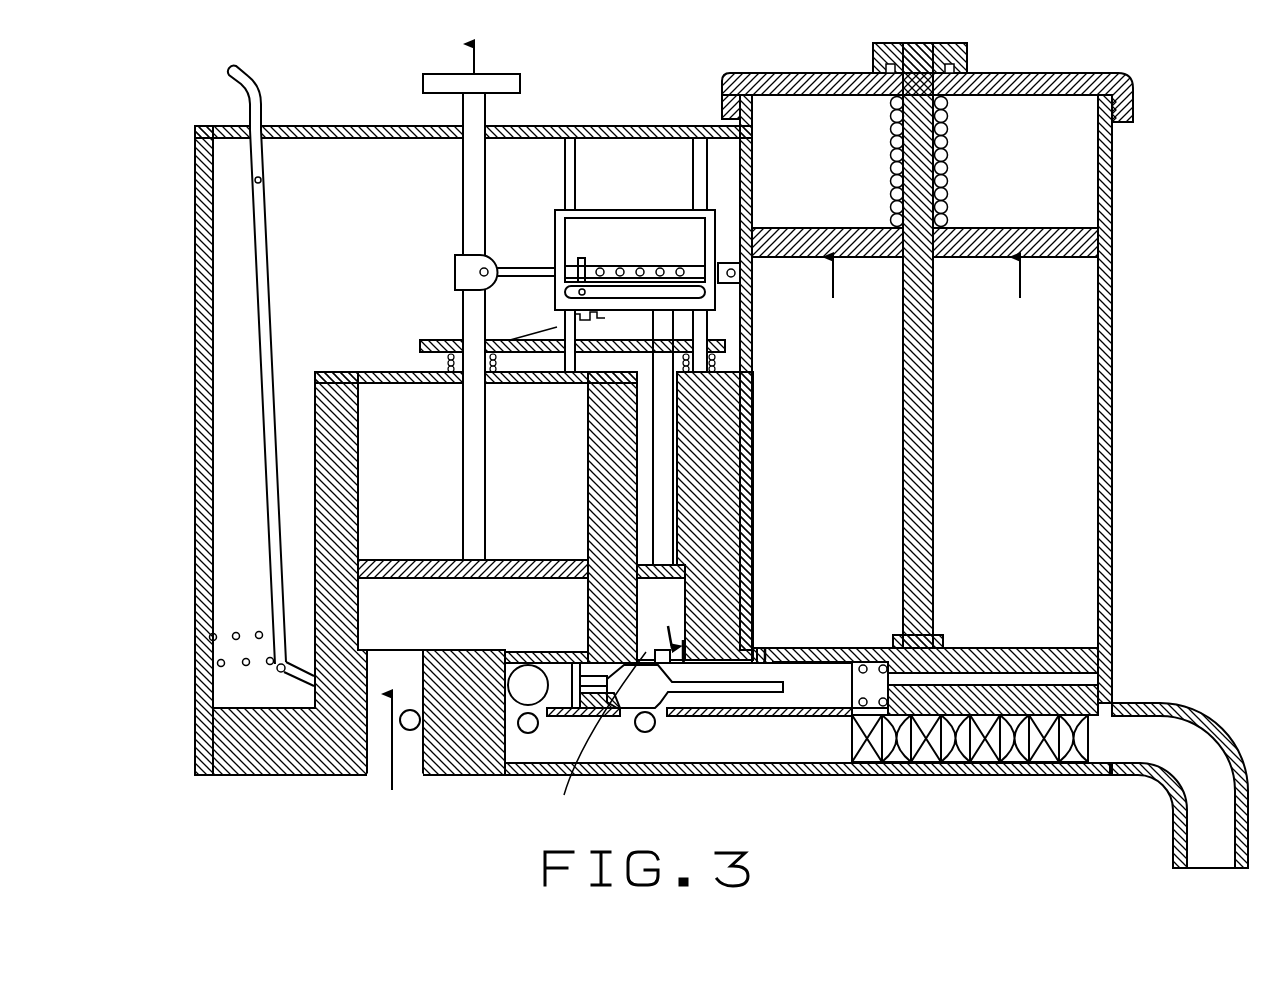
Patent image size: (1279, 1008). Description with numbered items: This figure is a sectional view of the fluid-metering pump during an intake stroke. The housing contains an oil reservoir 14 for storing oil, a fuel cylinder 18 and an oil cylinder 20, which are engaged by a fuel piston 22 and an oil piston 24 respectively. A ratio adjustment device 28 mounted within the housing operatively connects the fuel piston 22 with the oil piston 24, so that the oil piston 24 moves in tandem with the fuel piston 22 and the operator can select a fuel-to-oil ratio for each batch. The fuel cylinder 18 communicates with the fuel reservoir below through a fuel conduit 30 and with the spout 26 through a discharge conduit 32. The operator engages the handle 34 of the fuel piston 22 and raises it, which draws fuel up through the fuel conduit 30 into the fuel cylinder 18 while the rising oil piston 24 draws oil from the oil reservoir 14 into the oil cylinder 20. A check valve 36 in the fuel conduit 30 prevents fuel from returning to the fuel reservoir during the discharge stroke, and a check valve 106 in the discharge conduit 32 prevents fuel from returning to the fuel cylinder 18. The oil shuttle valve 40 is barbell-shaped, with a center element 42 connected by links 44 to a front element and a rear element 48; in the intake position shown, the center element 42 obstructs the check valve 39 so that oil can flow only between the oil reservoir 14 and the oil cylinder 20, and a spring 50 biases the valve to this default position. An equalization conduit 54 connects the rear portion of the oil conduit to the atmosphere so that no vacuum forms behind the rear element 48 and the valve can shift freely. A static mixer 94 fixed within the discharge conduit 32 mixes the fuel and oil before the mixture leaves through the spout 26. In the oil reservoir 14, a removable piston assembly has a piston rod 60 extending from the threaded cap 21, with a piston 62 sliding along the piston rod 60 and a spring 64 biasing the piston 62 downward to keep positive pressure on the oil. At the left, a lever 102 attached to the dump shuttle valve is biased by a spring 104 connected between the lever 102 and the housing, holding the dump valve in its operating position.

The oil reservoir 14 is at (852, 468).
The fuel cylinder 18 is at (544, 492).
The oil cylinder 20 is at (674, 612).
The cap 21 is at (1100, 80).
The fuel piston 22 is at (478, 438).
The oil piston 24 is at (745, 390).
The spout 26 is at (1212, 850).
The ratio adjustment device 28 is at (615, 210).
The fuel conduit 30 is at (408, 685).
The discharge conduit 32 is at (540, 697).
The handle 34 is at (508, 80).
The check valve 36 is at (412, 732).
The check valve 39 is at (648, 733).
The oil shuttle valve 40 is at (599, 737).
The center element 42 is at (649, 704).
The links 44 is at (764, 690).
The rear element 48 is at (808, 690).
The spring 50 is at (822, 668).
The equalization conduit 54 is at (1105, 680).
The piston rod 60 is at (950, 178).
The piston 62 is at (855, 230).
The spring 64 is at (890, 195).
The static mixer 94 is at (1022, 762).
The lever 102 is at (245, 84).
The spring 104 is at (208, 637).
The check valve 106 is at (526, 733).